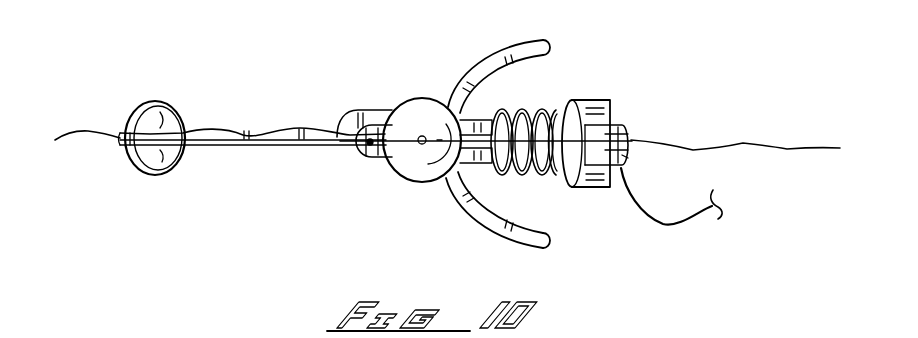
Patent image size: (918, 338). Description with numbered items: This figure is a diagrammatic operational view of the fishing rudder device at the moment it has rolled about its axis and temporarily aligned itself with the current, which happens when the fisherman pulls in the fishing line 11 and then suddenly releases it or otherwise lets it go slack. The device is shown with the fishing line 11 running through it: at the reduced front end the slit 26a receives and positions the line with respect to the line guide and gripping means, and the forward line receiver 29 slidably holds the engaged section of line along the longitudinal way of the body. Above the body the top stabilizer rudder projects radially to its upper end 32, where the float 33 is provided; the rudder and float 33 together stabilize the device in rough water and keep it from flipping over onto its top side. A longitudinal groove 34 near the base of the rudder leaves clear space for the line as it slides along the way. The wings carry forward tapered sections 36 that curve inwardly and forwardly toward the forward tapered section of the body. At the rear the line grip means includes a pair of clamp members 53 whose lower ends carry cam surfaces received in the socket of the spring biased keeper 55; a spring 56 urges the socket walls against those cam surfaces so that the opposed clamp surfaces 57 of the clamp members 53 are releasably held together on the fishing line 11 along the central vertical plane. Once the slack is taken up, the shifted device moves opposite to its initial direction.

The fishing line 11 is at (688, 222).
The slit 26a is at (419, 137).
The forward line receiver 29 is at (360, 157).
The upper end 32 is at (286, 145).
The float 33 is at (163, 127).
The longitudinal groove 34 is at (345, 123).
The forward tapered sections 36 is at (534, 42).
The clamp members 53 is at (632, 128).
The spring biased keeper 55 is at (621, 128).
The spring 56 is at (500, 112).
The clamp surfaces 57 is at (631, 158).